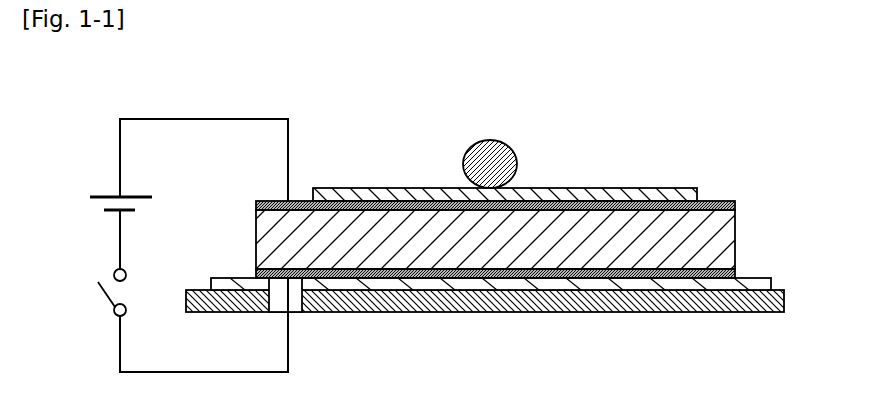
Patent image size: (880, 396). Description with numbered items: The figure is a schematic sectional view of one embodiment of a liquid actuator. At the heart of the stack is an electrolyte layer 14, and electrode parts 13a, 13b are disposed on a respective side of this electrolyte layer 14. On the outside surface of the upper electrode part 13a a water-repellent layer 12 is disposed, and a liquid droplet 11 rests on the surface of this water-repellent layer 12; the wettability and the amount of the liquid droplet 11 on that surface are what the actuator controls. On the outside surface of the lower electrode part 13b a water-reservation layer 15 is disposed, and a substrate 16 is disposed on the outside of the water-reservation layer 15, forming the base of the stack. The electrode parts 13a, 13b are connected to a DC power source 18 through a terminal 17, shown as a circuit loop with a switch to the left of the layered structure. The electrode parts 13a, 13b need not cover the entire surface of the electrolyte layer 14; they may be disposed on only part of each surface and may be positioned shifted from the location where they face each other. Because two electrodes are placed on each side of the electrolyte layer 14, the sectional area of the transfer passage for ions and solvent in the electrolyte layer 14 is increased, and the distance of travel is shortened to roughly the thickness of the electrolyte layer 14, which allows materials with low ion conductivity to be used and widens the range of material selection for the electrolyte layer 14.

The liquid droplet 11 is at (512, 150).
The water-repellent layer 12 is at (622, 190).
The electrode part 13a is at (727, 201).
The electrolyte layer 14 is at (727, 232).
The electrode part 13b is at (737, 273).
The water-reservation layer 15 is at (762, 284).
The substrate 16 is at (780, 310).
The terminal 17 is at (289, 148).
The DC power source 18 is at (101, 196).